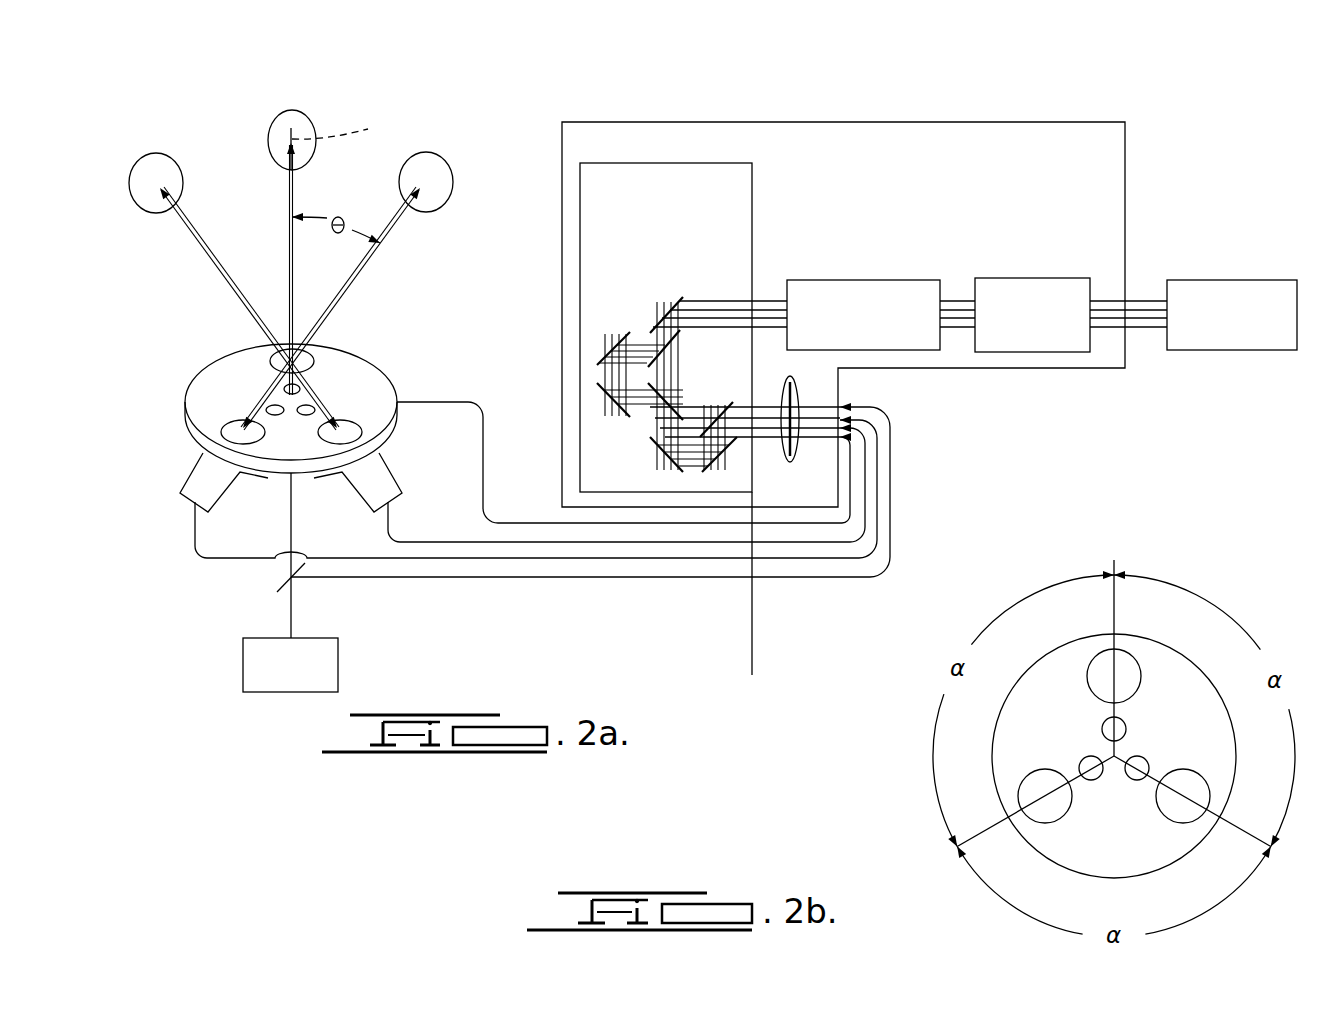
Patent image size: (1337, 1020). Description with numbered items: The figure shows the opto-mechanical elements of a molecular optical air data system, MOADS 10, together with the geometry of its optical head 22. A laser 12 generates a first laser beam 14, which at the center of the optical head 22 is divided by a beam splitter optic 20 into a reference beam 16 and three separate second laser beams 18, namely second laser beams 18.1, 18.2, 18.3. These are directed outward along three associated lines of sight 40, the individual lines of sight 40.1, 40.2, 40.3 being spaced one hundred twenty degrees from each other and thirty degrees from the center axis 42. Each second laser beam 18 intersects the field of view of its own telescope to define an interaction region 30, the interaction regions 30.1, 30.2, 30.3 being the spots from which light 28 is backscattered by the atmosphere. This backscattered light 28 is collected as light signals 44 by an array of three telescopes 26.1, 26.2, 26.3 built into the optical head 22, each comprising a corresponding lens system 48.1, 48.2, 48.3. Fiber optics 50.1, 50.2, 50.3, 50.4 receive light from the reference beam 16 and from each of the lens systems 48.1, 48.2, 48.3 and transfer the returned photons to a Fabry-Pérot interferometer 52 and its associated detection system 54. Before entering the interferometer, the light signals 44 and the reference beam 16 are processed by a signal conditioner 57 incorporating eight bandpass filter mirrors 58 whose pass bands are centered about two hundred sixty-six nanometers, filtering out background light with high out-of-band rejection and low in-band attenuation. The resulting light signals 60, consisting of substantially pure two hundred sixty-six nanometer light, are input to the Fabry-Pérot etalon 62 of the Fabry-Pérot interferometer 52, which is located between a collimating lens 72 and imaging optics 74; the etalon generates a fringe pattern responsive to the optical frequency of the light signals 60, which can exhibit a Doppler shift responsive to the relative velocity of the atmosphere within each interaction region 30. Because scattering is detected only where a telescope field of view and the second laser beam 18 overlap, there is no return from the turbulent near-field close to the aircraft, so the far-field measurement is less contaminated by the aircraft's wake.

In FIG. 2a, the MOADS 10 is at (1203, 112).
In FIG. 2a, the laser 12 is at (243, 667).
In FIG. 2a, the first laser beam 14 is at (290, 619).
In FIG. 2a, the reference beam 16 is at (480, 578).
In FIG. 2a, the second laser beams 18 is at (292, 528).
In FIG. 2a, the second laser beam 18.1 is at (223, 288).
In FIG. 2a, the second laser beam 18.2 is at (290, 220).
In FIG. 2a, the second laser beam 18.3 is at (370, 277).
In FIG. 2a, the beam splitter optic 20 is at (287, 580).
In FIG. 2a, the optical head 22 is at (377, 350).
In FIG. 2b, the optical head 22 is at (993, 758).
In FIG. 2a, the telescope 26.1 is at (353, 428).
In FIG. 2b, the telescope 26.1 is at (1195, 777).
In FIG. 2a, the telescope 26.2 is at (278, 358).
In FIG. 2b, the telescope 26.2 is at (1130, 673).
In FIG. 2a, the telescope 26.3 is at (233, 430).
In FIG. 2b, the telescope 26.3 is at (1045, 780).
In FIG. 2a, the light 28 is at (295, 289).
In FIG. 2a, the interaction region 30 is at (307, 415).
In FIG. 2b, the interaction region 30 is at (1103, 752).
In FIG. 2a, the first measurement spot 30.1 is at (138, 157).
In FIG. 2a, the second measurement spot 30.2 is at (268, 120).
In FIG. 2a, the third measurement spot 30.3 is at (433, 153).
In FIG. 2a, the lines of sight 40 is at (354, 299).
In FIG. 2a, the line of sight 40.1 is at (205, 265).
In FIG. 2a, the line of sight 40.2 is at (288, 287).
In FIG. 2a, the line of sight 40.3 is at (397, 240).
In FIG. 2a, the center axis 42 is at (339, 120).
In FIG. 2b, the center axis 42 is at (1114, 752).
In FIG. 2a, the light signals 44 is at (231, 289).
In FIG. 2b, the lens system 48.1 is at (1182, 813).
In FIG. 2b, the lens system 48.2 is at (1048, 813).
In FIG. 2b, the lens system 48.3 is at (1100, 668).
In FIG. 2a, the fiber optic 50.1 is at (467, 541).
In FIG. 2a, the fiber optic 50.2 is at (483, 455).
In FIG. 2a, the fiber optic 50.3 is at (625, 558).
In FIG. 2a, the fiber optic 50.4 is at (703, 577).
In FIG. 2a, the Fabry-Pérot interferometer 52 is at (1092, 368).
In FIG. 2a, the detection system 54 is at (1225, 280).
In FIG. 2a, the signal conditioner 57 is at (753, 182).
In FIG. 2a, the bandpass filter mirrors 58 is at (632, 332).
In FIG. 2a, the light signals 60 is at (729, 327).
In FIG. 2a, the Fabry-Pérot etalon 62 is at (862, 282).
In FIG. 2a, the collimating lens 72 is at (788, 462).
In FIG. 2a, the imaging optics 74 is at (1035, 270).